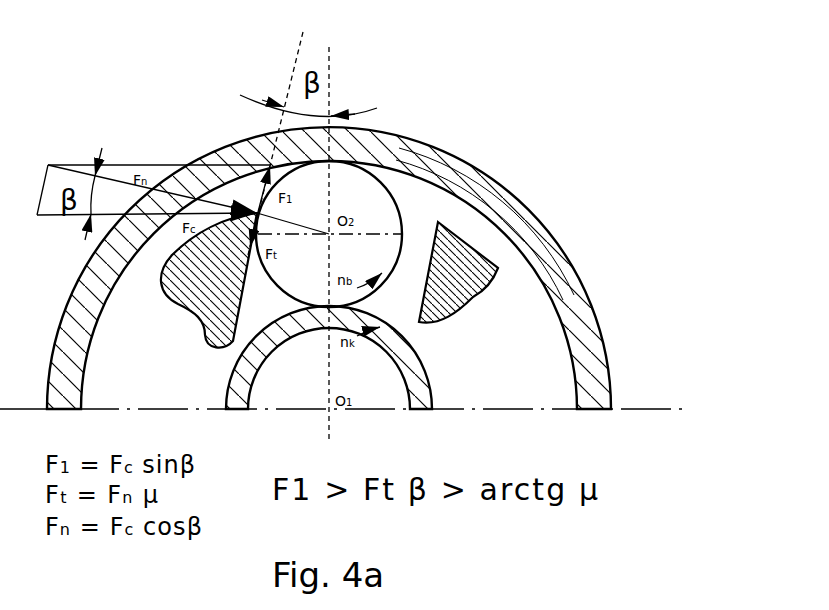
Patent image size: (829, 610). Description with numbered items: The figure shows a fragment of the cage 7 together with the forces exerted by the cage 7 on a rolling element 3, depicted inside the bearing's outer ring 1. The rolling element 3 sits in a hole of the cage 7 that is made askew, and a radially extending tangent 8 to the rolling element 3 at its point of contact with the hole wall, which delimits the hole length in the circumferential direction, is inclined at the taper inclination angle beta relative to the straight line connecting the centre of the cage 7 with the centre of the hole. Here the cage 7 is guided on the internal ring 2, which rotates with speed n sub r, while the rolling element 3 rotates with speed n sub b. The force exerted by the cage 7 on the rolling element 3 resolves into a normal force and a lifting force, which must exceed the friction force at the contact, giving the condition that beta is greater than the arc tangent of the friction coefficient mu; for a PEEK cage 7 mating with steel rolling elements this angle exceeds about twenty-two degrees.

The outer ring (outer race) 1 is at (495, 203).
The internal ring 2 is at (420, 383).
The rolling element 3 is at (392, 206).
The cage 7 is at (453, 288).
The tangent 8 is at (292, 70).